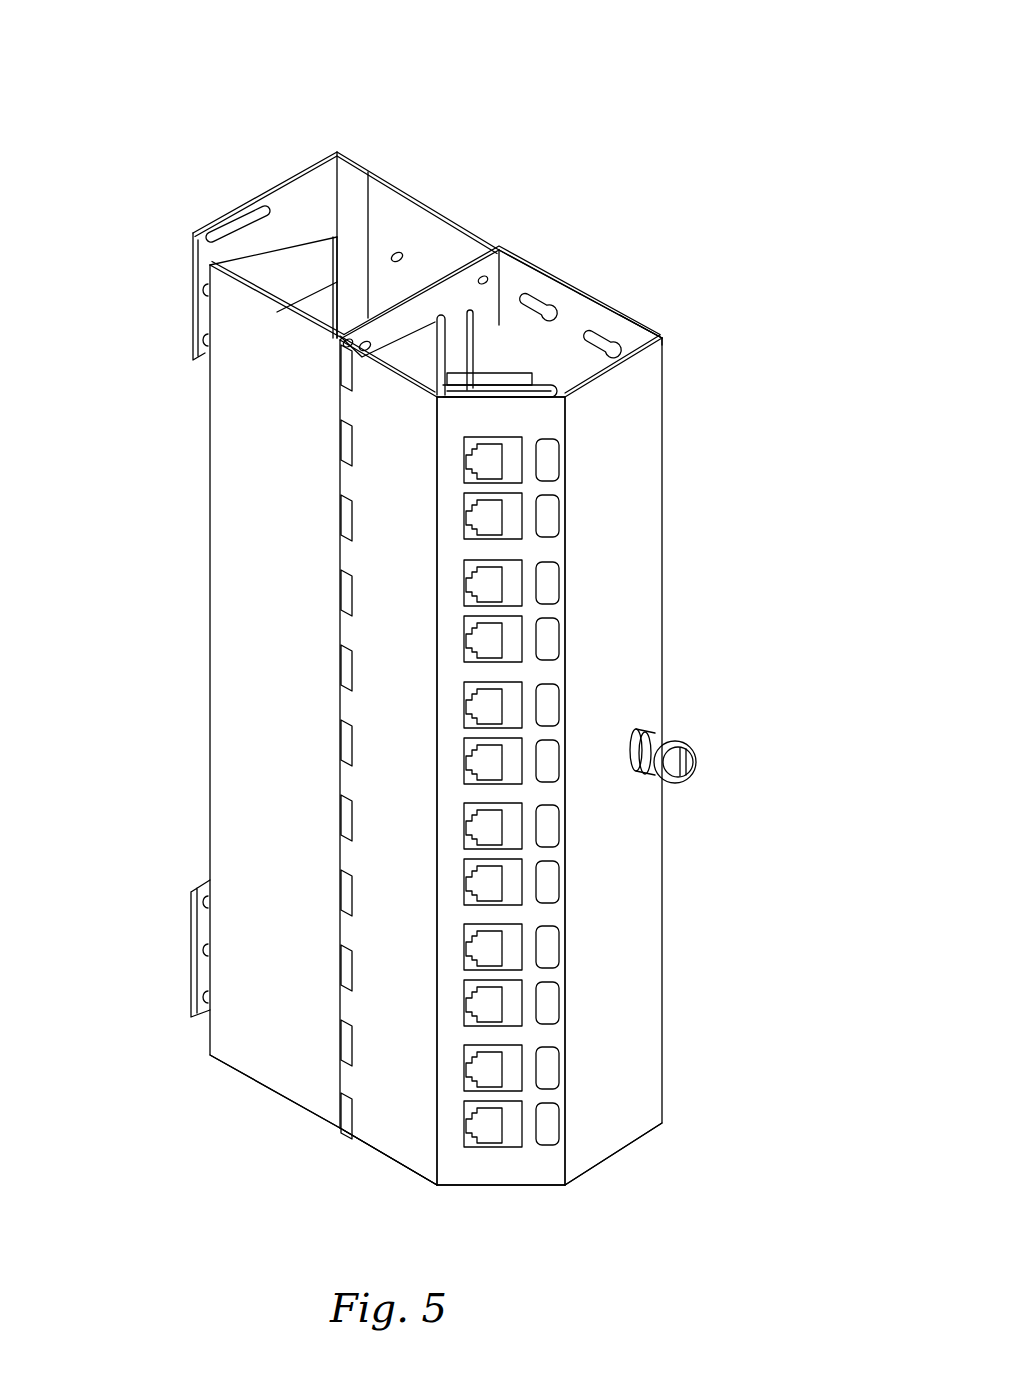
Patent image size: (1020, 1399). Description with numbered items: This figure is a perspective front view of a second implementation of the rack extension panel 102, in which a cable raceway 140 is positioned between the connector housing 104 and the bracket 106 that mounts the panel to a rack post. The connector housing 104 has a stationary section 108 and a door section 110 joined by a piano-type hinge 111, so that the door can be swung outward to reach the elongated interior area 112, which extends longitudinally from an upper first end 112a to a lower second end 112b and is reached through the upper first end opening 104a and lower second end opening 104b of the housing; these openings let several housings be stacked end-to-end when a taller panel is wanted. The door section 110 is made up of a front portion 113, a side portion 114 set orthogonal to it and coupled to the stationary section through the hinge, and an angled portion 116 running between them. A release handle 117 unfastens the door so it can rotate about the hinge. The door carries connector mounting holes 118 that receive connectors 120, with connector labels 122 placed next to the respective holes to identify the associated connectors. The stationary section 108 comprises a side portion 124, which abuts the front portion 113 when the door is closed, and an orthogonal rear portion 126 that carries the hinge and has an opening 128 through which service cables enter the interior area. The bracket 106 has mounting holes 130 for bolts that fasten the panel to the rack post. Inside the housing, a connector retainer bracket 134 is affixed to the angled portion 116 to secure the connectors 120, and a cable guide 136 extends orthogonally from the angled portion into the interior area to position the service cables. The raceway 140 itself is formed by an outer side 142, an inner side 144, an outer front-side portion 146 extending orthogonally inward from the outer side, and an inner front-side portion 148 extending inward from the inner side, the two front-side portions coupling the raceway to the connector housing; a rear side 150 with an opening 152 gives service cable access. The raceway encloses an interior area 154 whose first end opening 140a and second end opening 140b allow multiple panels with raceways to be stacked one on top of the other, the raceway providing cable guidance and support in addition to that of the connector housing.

The rack extension panel 102 is at (670, 65).
The connector housing 104 is at (658, 247).
The upper first end opening 104a is at (586, 1208).
The lower second end opening 104b is at (565, 342).
The bracket 106 is at (277, 178).
The stationary section 108 is at (684, 312).
The door section 110 is at (740, 650).
The piano-type hinge 111 is at (338, 1035).
The elongated interior area 112 is at (519, 328).
The upper first end 112a is at (640, 1198).
The lower second end 112b is at (561, 242).
The front portion 113 is at (640, 496).
The side portion 114 is at (383, 1123).
The angled portion 116 is at (538, 420).
The release handle 117 is at (700, 763).
The connector mounting holes 118 is at (523, 930).
The connectors 120 is at (493, 952).
The connector labels 122 is at (548, 582).
The side portion 124 is at (608, 305).
The rear portion 126 is at (443, 277).
The opening 128 is at (462, 333).
The mounting holes 130 is at (233, 230).
The connector retainer bracket 134 is at (548, 380).
The cable guide 136 is at (402, 347).
The raceway 140 is at (455, 100).
The first end opening 140a is at (225, 1103).
The second end opening 140b is at (385, 217).
The outer side 142 is at (430, 200).
The inner side 144 is at (232, 410).
The outer front-side portion 146 is at (460, 270).
The inner front-side portion 148 is at (332, 325).
The rear side 150 is at (268, 260).
The opening 152 is at (323, 235).
The interior area 154 is at (357, 222).